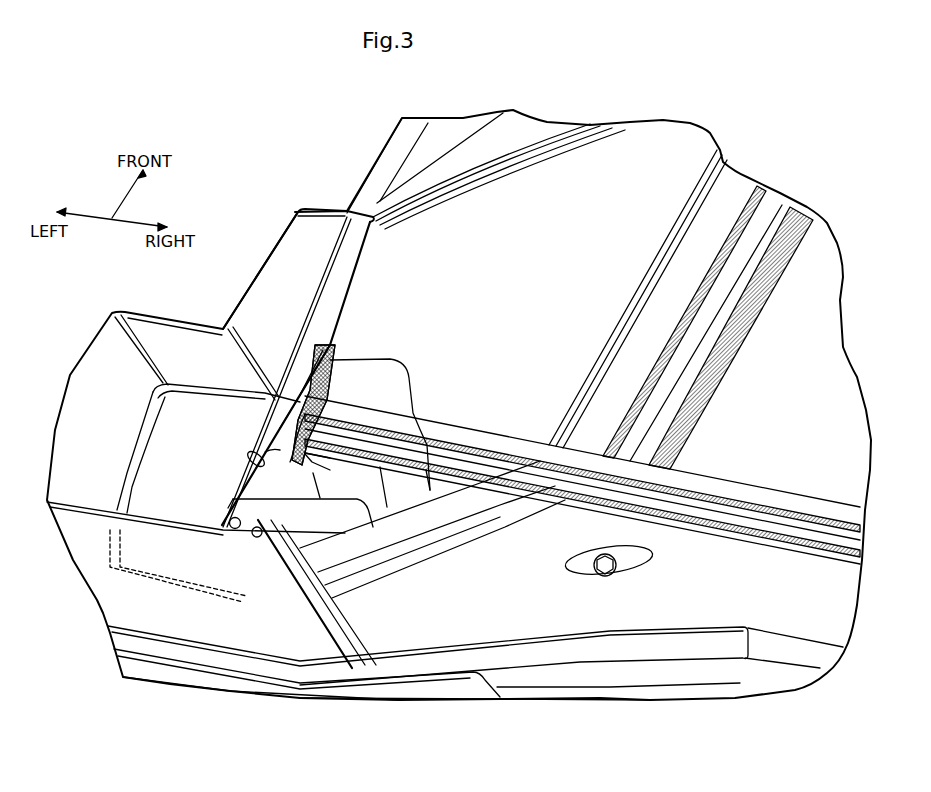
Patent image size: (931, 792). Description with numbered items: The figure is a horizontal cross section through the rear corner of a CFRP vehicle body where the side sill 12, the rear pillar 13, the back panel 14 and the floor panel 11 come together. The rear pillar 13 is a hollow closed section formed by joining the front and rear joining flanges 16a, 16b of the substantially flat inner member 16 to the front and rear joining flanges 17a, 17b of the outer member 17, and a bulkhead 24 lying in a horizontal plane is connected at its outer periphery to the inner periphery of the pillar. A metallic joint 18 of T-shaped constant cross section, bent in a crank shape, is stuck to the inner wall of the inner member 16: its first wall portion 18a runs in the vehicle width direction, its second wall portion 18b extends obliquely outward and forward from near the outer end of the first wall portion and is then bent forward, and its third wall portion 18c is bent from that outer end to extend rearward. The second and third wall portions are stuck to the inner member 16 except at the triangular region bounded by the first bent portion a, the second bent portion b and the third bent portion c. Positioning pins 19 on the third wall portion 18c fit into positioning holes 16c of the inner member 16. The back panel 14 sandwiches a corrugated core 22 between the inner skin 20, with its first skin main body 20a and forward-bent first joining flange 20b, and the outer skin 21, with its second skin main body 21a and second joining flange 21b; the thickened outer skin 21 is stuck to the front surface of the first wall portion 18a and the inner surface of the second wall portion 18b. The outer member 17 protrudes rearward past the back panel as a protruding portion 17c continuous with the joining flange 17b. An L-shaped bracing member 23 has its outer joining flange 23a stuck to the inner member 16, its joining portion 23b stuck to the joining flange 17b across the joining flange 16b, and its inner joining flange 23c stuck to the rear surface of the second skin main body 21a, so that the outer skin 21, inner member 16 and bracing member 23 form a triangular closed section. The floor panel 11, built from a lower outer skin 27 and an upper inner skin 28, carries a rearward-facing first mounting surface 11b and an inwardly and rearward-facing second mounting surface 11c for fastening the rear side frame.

The floor panel 11 is at (713, 130).
The first mounting surface 11b is at (240, 685).
The second mounting surface 11c is at (437, 690).
The side sill 12 is at (383, 143).
The rear pillar 13 is at (289, 193).
The back panel 14 is at (670, 532).
The inner member 16 is at (343, 290).
The front joining flange of inner member 16a is at (340, 213).
The rear joining flange of inner member 16b is at (315, 578).
The positioning hole 16c is at (243, 462).
The outer member 17 is at (260, 267).
The front joining flange of outer member 17a is at (333, 223).
The rear joining flange of outer member 17b is at (298, 606).
The protruding portion 17c is at (137, 545).
The joint 18 is at (313, 475).
The first wall portion 18a is at (326, 465).
The second wall portion 18b is at (307, 383).
The third wall portion 18c is at (265, 452).
The positioning pin 19 is at (290, 473).
The inner skin 20 is at (738, 498).
The first skin main body 20a is at (573, 470).
The first joining flange 20b is at (333, 377).
The outer skin 21 is at (740, 545).
The second skin main body 21a is at (617, 518).
The second joining flange 21b is at (330, 411).
The corrugated core 22 is at (498, 468).
The bracing member 23 is at (430, 490).
The joining flange of bracing member (outer end) 23a is at (230, 528).
The joining portion 23b is at (259, 540).
The joining flange of bracing member (inner end) 23c is at (500, 497).
The bulkhead 24 is at (163, 445).
The lower outer skin 27 is at (147, 667).
The upper inner skin 28 is at (137, 643).
The first bent portion a is at (308, 463).
The second bent portion b is at (288, 417).
The third bent portion c is at (270, 440).